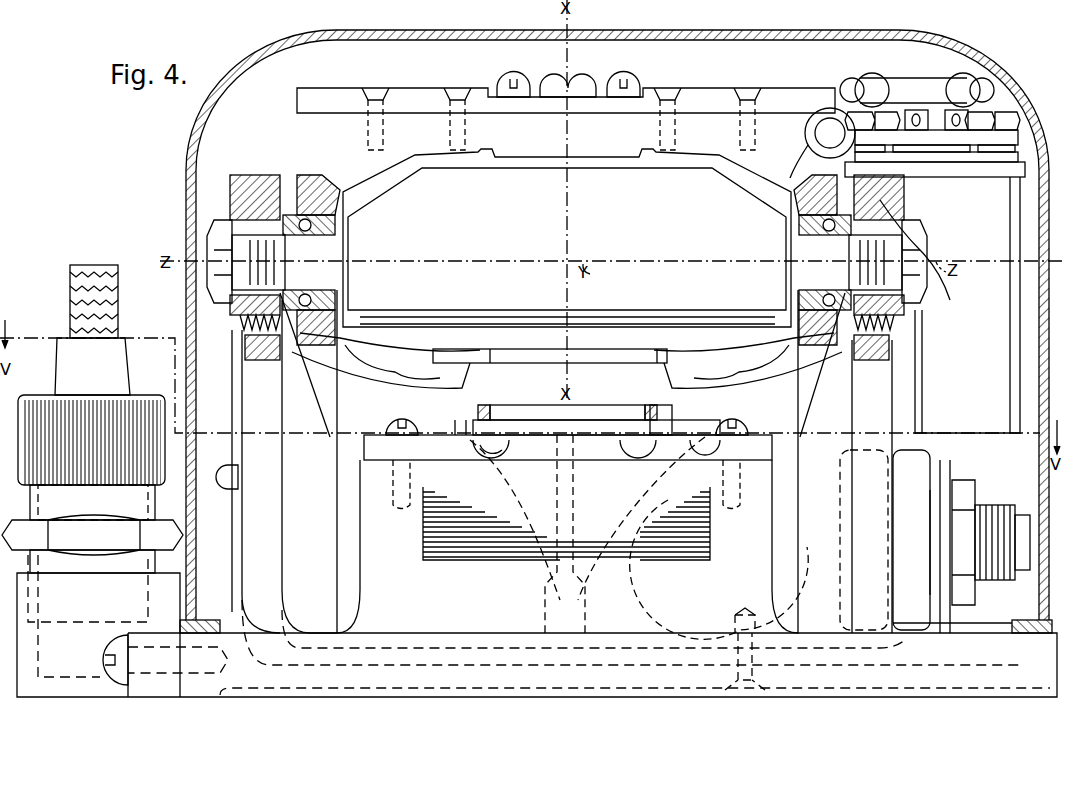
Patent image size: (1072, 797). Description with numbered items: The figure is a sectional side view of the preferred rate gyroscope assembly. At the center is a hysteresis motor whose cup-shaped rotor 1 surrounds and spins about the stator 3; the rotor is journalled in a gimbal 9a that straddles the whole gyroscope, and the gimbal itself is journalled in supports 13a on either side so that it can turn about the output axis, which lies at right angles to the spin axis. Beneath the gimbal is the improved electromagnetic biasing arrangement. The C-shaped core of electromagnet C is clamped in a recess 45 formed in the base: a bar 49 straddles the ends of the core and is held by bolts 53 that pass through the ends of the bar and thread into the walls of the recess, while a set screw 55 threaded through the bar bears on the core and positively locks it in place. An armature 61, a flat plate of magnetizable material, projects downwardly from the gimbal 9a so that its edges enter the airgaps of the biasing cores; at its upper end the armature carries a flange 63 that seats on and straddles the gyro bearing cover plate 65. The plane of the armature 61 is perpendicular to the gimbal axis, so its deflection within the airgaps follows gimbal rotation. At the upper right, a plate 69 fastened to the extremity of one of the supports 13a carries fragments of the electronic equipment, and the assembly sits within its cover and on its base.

The rotor 1 is at (370, 226).
The stator 3 is at (732, 338).
The gimbal 9a is at (352, 170).
The support 13a is at (262, 178).
The recess 45 is at (466, 560).
The bar 49 is at (603, 455).
The bolt 53 is at (392, 428).
The set screw 55 is at (485, 425).
The armature 61 is at (575, 504).
The flange 63 is at (660, 410).
The gyro bearing cover plate 65 is at (594, 410).
The plate 69 is at (972, 172).
The electromagnet C is at (512, 548).